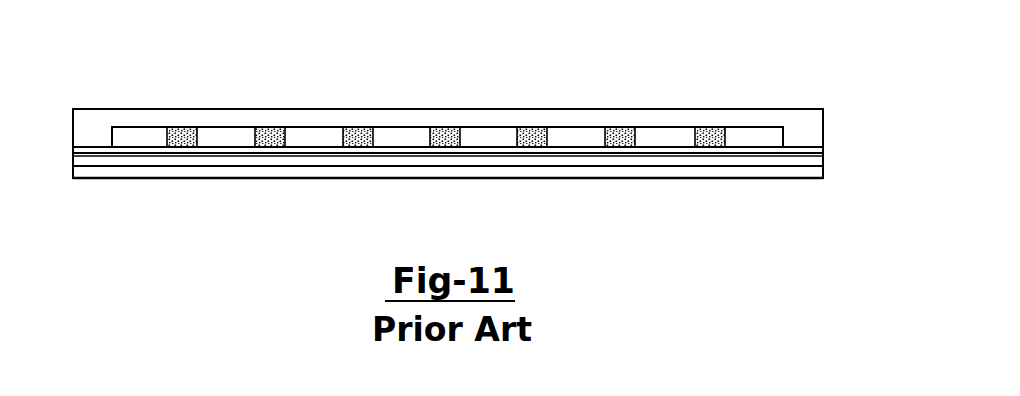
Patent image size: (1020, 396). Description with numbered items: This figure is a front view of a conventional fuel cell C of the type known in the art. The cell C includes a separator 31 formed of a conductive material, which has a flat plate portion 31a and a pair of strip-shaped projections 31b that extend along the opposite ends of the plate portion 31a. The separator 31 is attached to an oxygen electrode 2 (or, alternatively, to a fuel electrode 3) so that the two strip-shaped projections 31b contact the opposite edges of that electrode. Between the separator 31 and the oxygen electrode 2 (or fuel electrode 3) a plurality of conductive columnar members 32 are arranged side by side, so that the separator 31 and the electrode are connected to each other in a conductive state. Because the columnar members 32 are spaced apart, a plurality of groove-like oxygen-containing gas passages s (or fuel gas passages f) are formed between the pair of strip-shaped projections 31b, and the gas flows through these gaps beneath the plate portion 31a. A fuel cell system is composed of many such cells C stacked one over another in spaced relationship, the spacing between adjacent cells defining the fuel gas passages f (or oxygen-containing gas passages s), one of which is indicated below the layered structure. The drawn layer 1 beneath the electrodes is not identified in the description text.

The cell C is at (119, 90).
The substrate 1 is at (817, 162).
The oxygen electrode 2 is at (802, 150).
The fuel electrode 3 is at (752, 172).
The separator 31 is at (538, 109).
The plate portion 31a is at (267, 118).
The strip-shaped projections 31b is at (85, 135).
The conductive columnar members 32 is at (174, 136).
The oxygen-containing gas passages s is at (402, 136).
The fuel gas passages f is at (460, 143).